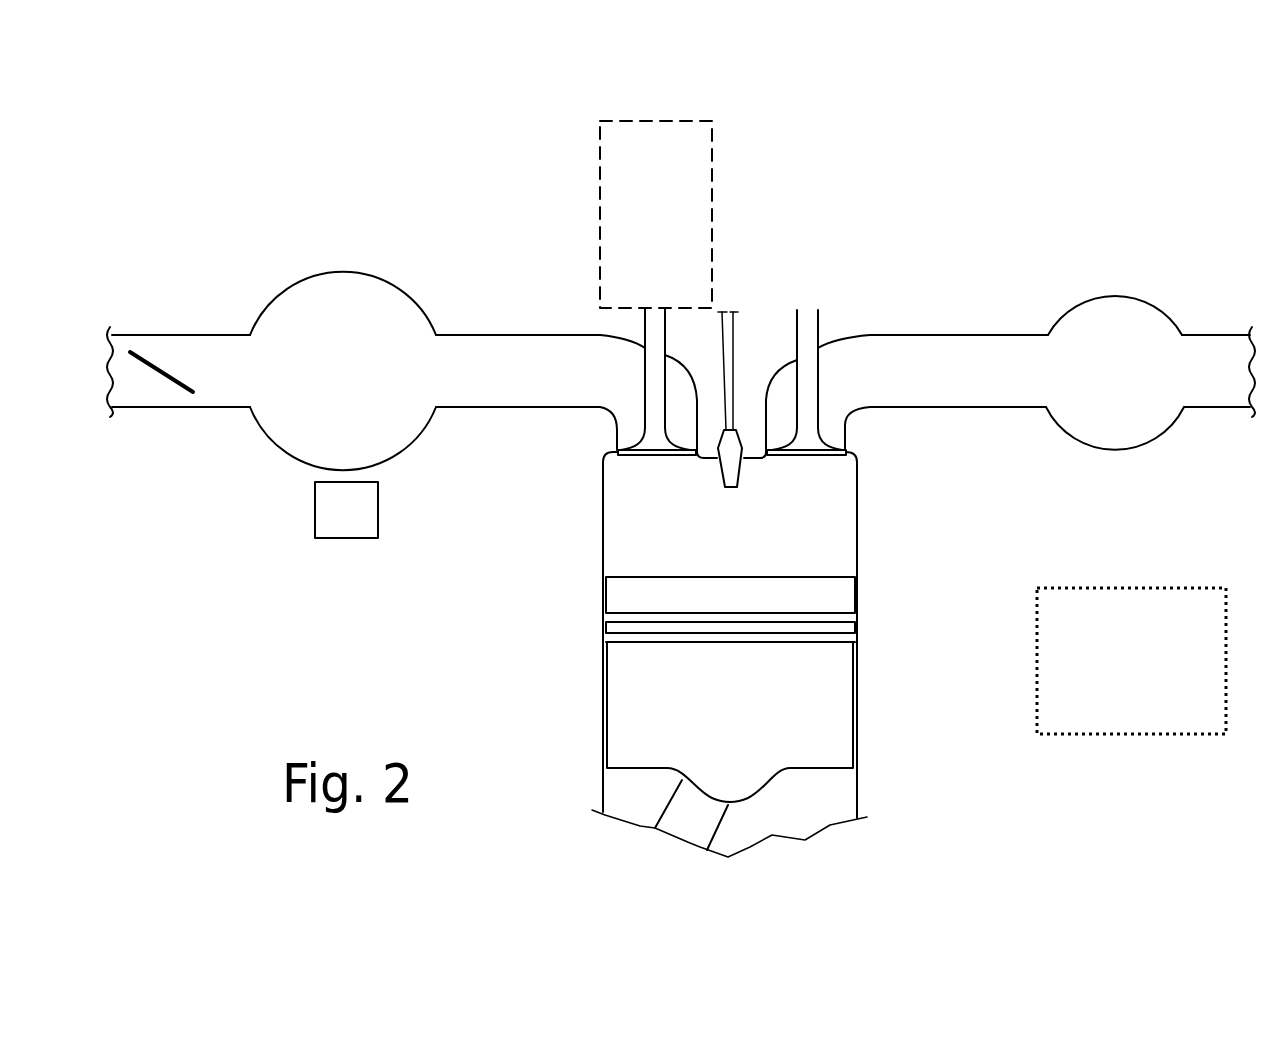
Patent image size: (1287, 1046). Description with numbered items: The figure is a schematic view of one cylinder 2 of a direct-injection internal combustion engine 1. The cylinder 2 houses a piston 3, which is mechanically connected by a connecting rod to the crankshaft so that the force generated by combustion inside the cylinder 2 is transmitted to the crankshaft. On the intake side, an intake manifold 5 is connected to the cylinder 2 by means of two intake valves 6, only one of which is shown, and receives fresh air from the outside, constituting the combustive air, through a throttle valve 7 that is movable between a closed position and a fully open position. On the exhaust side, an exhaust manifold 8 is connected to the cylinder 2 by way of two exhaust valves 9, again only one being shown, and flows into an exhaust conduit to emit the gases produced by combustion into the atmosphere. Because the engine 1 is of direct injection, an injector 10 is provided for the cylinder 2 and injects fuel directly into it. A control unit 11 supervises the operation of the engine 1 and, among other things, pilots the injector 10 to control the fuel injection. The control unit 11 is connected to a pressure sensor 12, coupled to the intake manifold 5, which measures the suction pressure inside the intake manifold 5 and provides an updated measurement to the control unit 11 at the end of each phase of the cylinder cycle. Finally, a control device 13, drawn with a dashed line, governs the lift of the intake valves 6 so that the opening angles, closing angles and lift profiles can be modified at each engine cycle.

The internal combustion engine 1 is at (260, 128).
The cylinder 2 is at (627, 538).
The piston 3 is at (808, 687).
The intake manifold 5 is at (350, 318).
The intake valve 6 is at (648, 443).
The throttle valve 7 is at (160, 368).
The exhaust manifold 8 is at (1122, 340).
The exhaust valve 9 is at (808, 443).
The injector 10 is at (733, 472).
The control unit 11 is at (1131, 661).
The pressure sensor 12 is at (346, 510).
The control device 13 is at (656, 214).